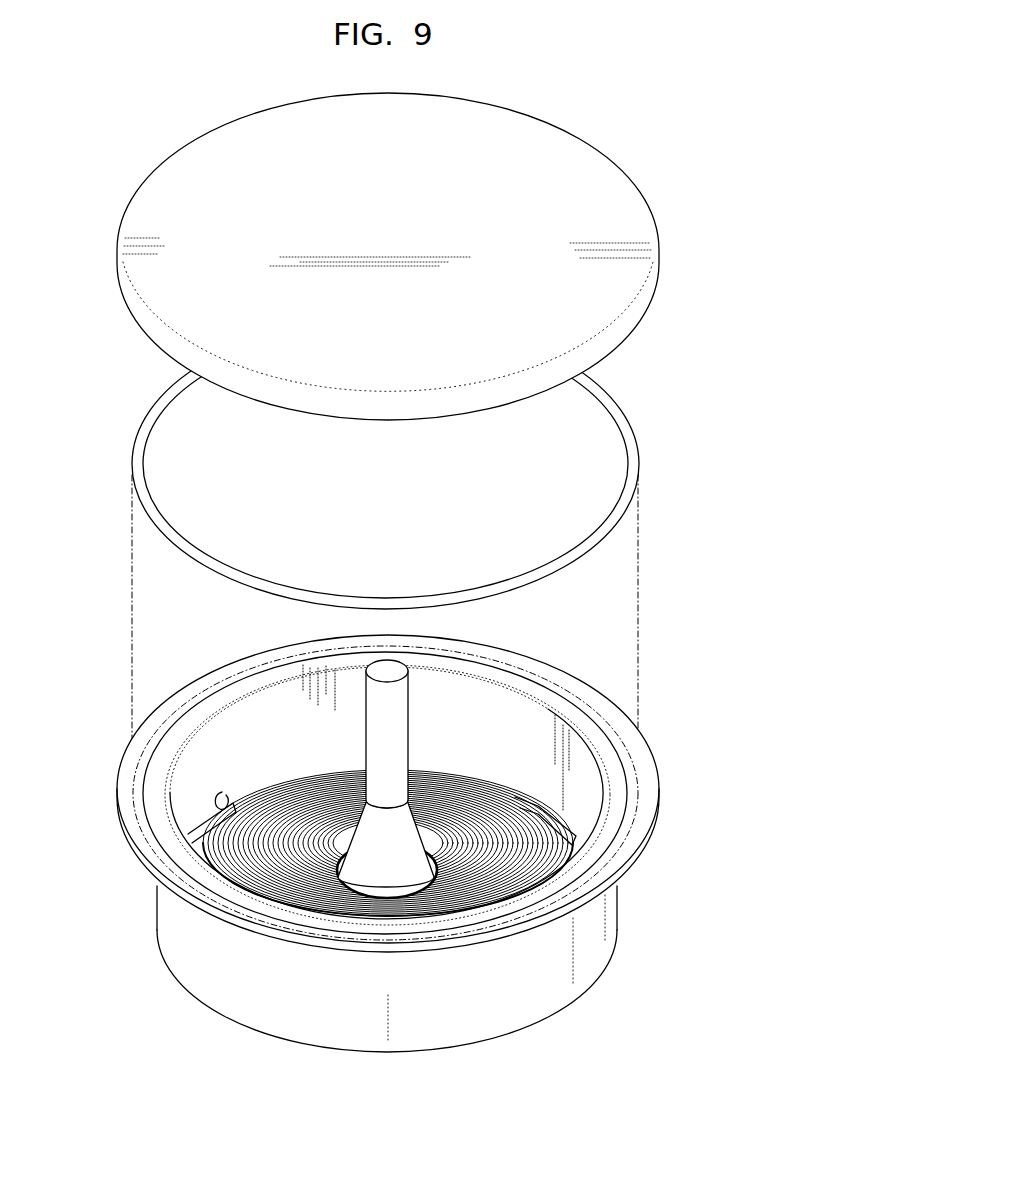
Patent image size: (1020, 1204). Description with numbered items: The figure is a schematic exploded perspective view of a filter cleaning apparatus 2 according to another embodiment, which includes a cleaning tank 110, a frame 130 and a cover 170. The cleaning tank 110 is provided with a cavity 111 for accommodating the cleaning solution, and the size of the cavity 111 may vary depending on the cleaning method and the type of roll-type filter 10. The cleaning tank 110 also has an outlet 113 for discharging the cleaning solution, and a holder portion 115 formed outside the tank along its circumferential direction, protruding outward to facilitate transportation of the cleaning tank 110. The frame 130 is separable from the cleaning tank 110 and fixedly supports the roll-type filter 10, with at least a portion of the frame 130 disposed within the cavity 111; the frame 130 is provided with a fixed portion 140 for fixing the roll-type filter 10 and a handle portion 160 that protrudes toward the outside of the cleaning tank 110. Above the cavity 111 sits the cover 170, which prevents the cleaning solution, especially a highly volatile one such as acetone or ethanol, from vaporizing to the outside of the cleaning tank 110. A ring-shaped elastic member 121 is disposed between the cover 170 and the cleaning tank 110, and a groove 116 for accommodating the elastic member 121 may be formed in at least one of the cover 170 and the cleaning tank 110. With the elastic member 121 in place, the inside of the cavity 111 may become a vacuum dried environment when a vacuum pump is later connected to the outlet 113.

The filter cleaning apparatus 2 is at (612, 85).
The roll-type filter 10 is at (478, 800).
The cleaning tank 110 is at (628, 908).
The cavity 111 is at (466, 728).
The outlet 113 is at (222, 801).
The holder portion 115 is at (121, 792).
The groove 116 is at (621, 833).
The elastic member 121 is at (627, 431).
The frame 130 is at (575, 833).
The fixed portion 140 is at (365, 833).
The handle portion 160 is at (400, 699).
The cover 170 is at (207, 160).